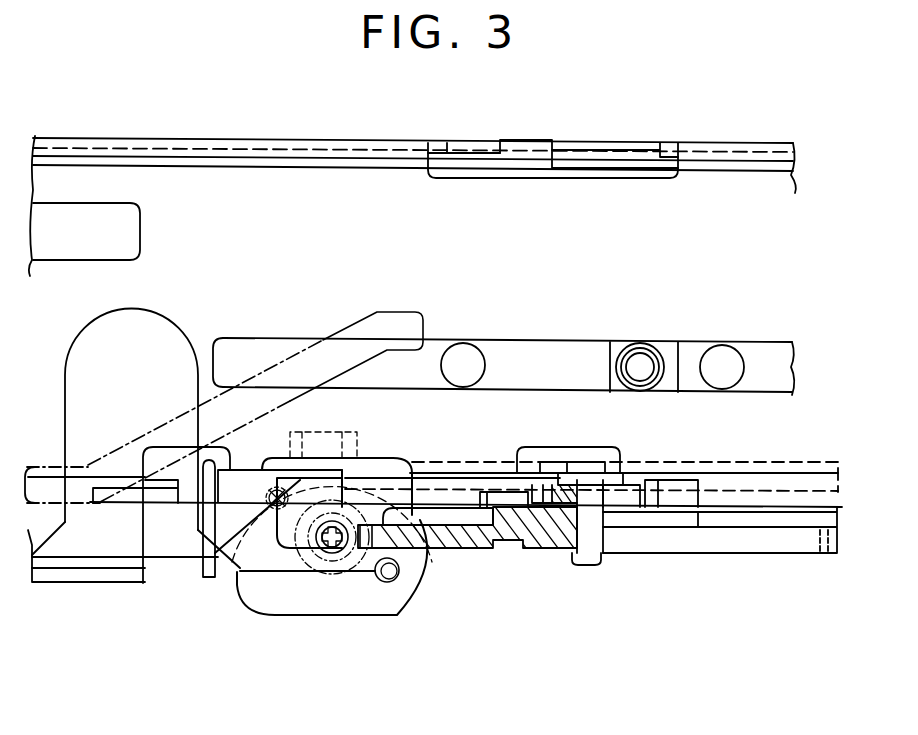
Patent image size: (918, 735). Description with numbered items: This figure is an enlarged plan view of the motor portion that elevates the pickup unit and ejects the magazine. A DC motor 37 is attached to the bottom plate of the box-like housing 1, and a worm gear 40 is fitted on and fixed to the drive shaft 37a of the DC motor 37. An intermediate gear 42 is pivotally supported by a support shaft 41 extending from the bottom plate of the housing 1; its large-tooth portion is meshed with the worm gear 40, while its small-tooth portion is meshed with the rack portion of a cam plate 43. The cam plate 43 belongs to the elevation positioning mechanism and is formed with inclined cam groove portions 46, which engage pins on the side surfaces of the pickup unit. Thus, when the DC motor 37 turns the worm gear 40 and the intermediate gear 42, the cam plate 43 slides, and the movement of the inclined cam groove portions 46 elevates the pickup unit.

The housing 1 is at (752, 144).
The inclined cam groove portion 46 is at (326, 349).
The cam plate 43 is at (185, 553).
The worm gear 40 is at (310, 572).
The drive shaft 37a is at (341, 548).
The DC motor 37 is at (405, 594).
The intermediate gear 42 is at (508, 546).
The support shaft 41 is at (588, 564).